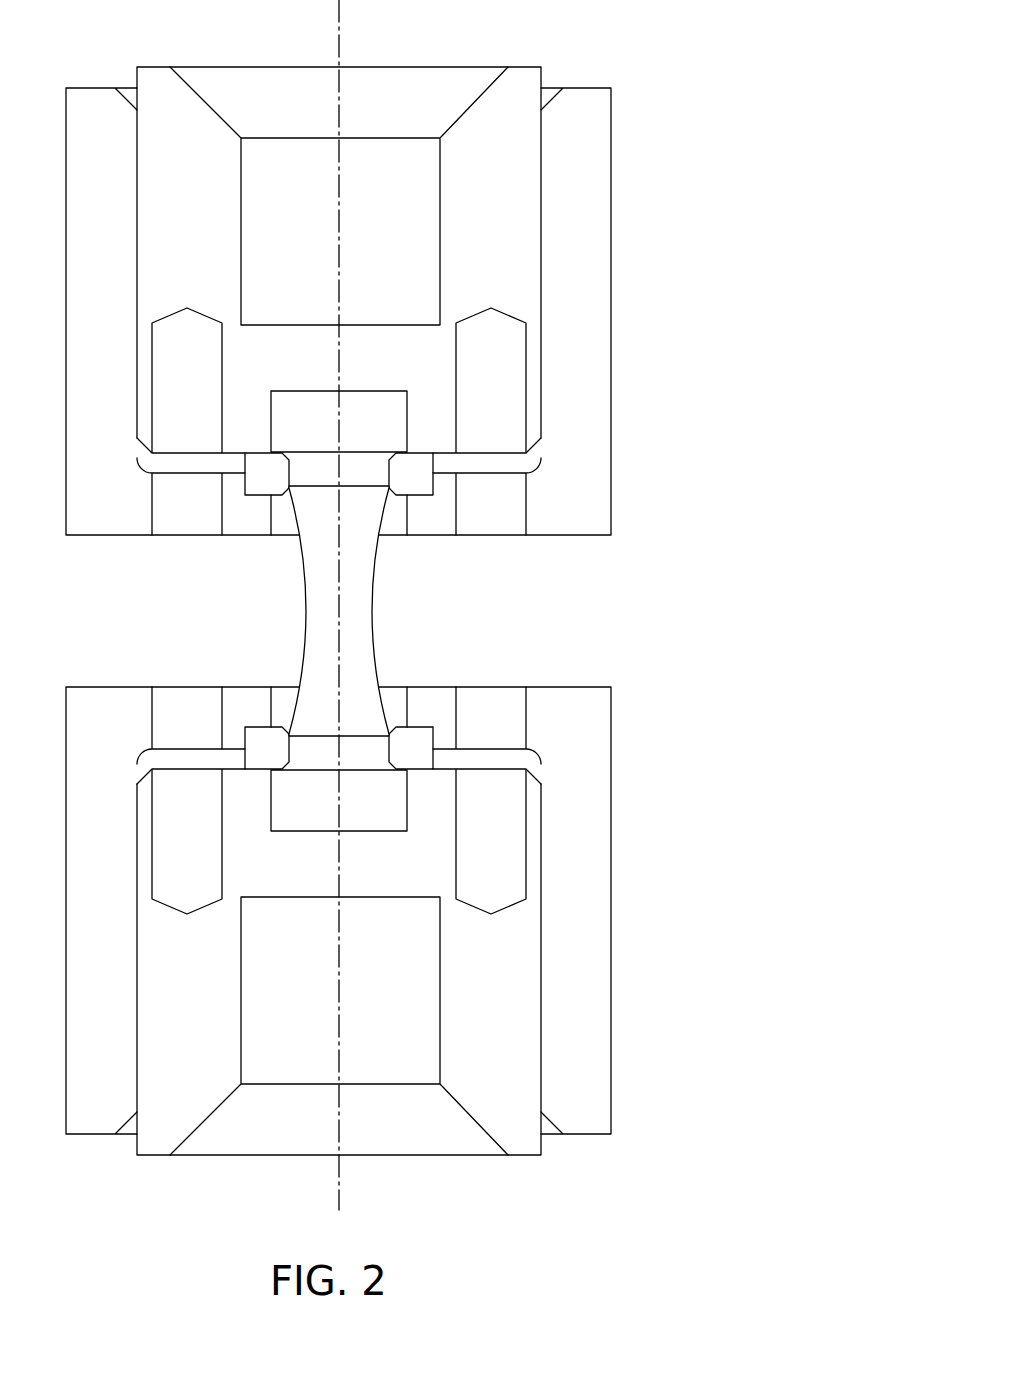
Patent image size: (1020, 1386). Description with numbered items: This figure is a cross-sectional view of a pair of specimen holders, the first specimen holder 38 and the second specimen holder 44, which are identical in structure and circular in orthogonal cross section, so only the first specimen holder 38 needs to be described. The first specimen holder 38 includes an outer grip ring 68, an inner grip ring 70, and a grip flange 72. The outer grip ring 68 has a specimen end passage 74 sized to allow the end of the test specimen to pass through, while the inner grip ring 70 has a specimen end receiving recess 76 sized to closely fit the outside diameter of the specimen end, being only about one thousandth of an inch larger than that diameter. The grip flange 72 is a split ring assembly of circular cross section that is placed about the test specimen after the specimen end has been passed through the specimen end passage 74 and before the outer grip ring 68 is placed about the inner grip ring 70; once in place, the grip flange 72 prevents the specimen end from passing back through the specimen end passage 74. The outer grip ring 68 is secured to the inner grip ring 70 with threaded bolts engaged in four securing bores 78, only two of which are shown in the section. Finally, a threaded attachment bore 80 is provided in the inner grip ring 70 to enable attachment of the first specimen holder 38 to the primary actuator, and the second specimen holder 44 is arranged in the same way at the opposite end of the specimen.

The first specimen holder 38 is at (425, 335).
The second specimen holder 44 is at (650, 808).
The outer grip ring 68 is at (612, 115).
The inner grip ring 70 is at (531, 67).
The grip flange 72 is at (403, 496).
The specimen end passage 74 is at (285, 536).
The specimen end receiving recess 76 is at (373, 391).
The securing bores 78 is at (192, 552).
The threaded attachment bore 80 is at (308, 235).